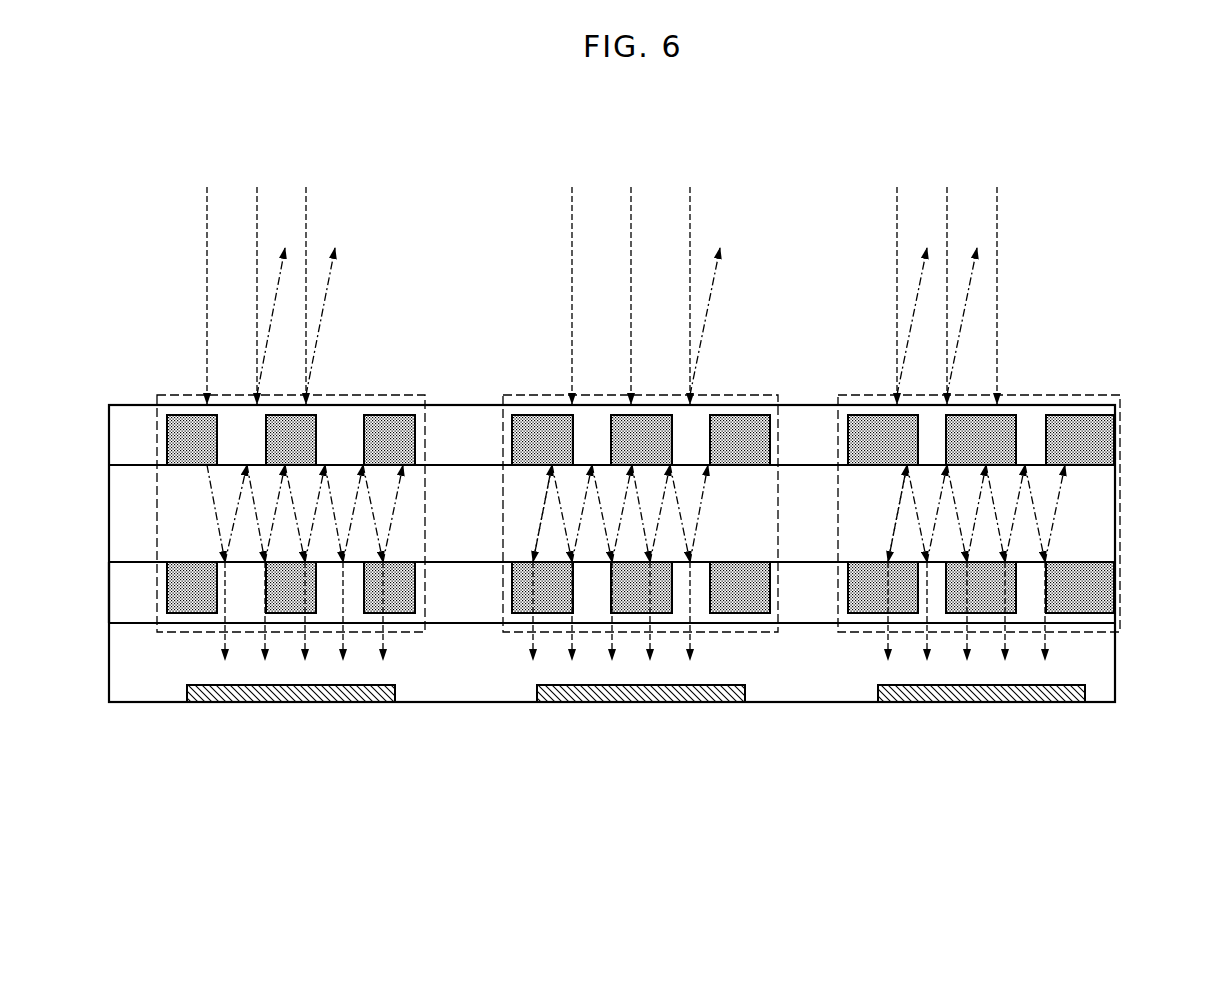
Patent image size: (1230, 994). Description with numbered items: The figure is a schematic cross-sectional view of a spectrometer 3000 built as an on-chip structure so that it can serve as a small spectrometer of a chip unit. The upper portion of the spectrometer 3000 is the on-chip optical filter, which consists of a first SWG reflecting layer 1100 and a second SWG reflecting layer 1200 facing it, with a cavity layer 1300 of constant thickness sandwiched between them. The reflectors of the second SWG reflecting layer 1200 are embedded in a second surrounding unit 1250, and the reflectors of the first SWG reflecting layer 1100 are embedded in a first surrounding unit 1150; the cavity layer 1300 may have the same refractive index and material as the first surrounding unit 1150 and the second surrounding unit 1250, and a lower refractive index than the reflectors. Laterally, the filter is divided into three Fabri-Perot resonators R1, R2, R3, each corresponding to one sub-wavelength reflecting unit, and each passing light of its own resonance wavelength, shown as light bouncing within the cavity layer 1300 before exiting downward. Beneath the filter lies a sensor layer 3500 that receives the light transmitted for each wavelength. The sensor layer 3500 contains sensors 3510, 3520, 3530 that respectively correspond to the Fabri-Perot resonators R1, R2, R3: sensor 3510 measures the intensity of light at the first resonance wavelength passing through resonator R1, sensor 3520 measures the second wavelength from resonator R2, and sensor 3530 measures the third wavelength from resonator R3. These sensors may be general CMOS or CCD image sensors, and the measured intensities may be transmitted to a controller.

The spectrometer 3000 is at (1094, 208).
The second SWG reflecting layer 1200 is at (1125, 405).
The cavity layer 1300 is at (1125, 467).
The first SWG reflecting layer 1100 is at (1125, 565).
The second surrounding unit 1250 is at (128, 420).
The first surrounding unit 1150 is at (128, 612).
The sensor layer 3500 is at (1125, 625).
The sensor 3510 is at (300, 695).
The sensor 3520 is at (641, 695).
The sensor 3530 is at (989, 695).
The Fabri-Perot resonator R1 is at (178, 395).
The Fabri-Perot resonator R2 is at (538, 395).
The Fabri-Perot resonator R3 is at (875, 395).